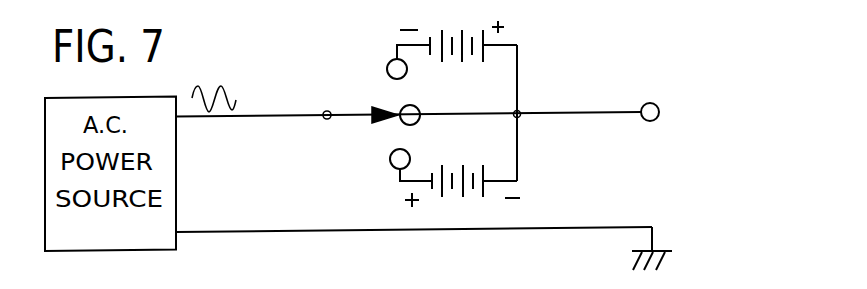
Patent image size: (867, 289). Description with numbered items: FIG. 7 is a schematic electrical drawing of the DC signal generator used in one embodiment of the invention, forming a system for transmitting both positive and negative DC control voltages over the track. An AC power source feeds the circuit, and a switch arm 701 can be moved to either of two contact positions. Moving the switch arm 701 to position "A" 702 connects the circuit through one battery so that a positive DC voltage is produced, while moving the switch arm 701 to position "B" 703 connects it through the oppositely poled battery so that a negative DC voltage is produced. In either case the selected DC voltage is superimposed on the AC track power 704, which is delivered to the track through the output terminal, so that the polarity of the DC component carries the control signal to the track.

The switch arm 701 is at (370, 117).
The switch position A 702 is at (392, 76).
The switch position B 703 is at (408, 152).
The AC track power 704 is at (646, 104).